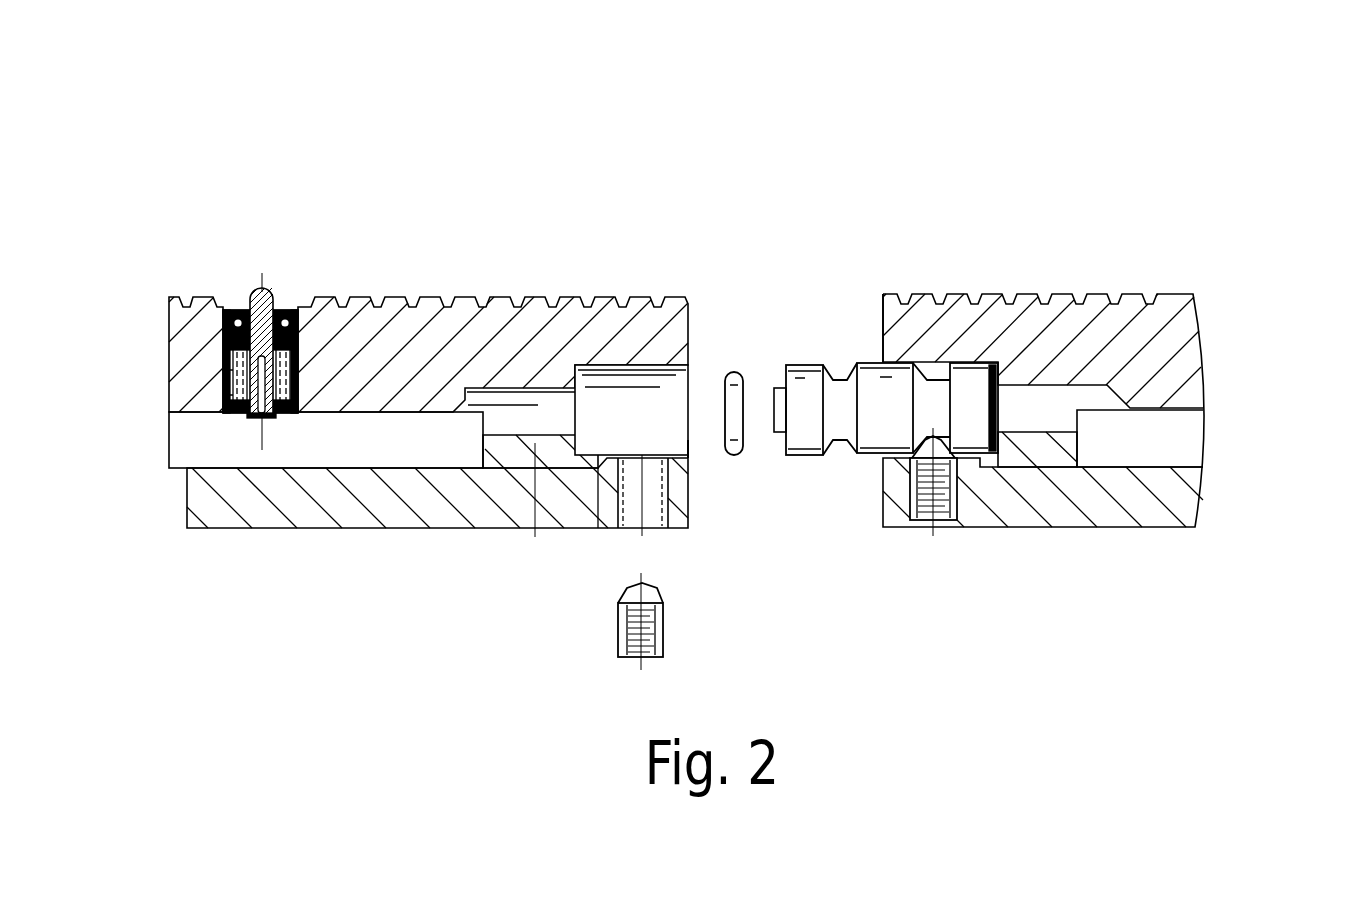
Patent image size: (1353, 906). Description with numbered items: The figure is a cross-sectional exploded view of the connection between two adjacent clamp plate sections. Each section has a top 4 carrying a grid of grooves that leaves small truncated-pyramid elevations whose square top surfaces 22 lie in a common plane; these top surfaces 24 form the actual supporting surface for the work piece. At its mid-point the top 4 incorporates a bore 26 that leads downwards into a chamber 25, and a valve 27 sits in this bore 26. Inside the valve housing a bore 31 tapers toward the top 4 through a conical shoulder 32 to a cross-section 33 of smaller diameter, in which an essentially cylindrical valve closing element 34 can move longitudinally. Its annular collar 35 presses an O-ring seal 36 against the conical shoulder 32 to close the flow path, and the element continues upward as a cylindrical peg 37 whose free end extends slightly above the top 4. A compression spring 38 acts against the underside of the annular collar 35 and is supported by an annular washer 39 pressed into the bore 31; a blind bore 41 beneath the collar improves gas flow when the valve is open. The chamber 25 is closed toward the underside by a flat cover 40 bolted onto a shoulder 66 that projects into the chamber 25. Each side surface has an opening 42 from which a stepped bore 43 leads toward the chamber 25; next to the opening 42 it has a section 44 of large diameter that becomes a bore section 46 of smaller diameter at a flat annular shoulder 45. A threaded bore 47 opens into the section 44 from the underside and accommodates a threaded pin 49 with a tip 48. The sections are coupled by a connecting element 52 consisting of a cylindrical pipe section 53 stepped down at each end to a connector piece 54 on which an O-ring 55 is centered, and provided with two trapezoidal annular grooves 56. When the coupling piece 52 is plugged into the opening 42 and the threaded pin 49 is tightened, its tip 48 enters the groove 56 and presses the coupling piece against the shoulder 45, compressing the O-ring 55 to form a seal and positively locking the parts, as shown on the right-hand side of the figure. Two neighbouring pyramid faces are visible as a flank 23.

The top 4 is at (715, 425).
The top surface 22 is at (1015, 389).
The end face 23 is at (883, 297).
The top surfaces 24 is at (884, 296).
The chamber 25 is at (200, 455).
The bore 26 is at (224, 355).
The valve 27 is at (415, 379).
The bore 31 is at (224, 380).
The conical shoulder 32 is at (222, 335).
The cross-section 33 is at (280, 396).
The valve closing element 34 is at (260, 417).
The annular collar 35 is at (227, 342).
The O-ring seal 36 is at (298, 333).
The cylindrical peg 37 is at (277, 293).
The compression spring 38 is at (300, 405).
The annular washer 39 is at (278, 422).
The cover 40 is at (451, 553).
The blind bore 41 is at (267, 420).
The opening 42 is at (300, 367).
The stepped bore 43 is at (554, 421).
The section of large diameter 44 is at (690, 452).
The annular shoulder 45 is at (590, 368).
The bore section 46 is at (483, 388).
The threaded bore 47 is at (653, 530).
The tip 48 is at (667, 592).
The threaded pin 49 is at (705, 639).
The connecting element 52 is at (869, 505).
The pipe section 53 is at (875, 387).
The connector piece 54 is at (778, 432).
The O-ring 55 is at (734, 373).
The annular groove 56 is at (920, 362).
The shoulder 66 is at (503, 465).